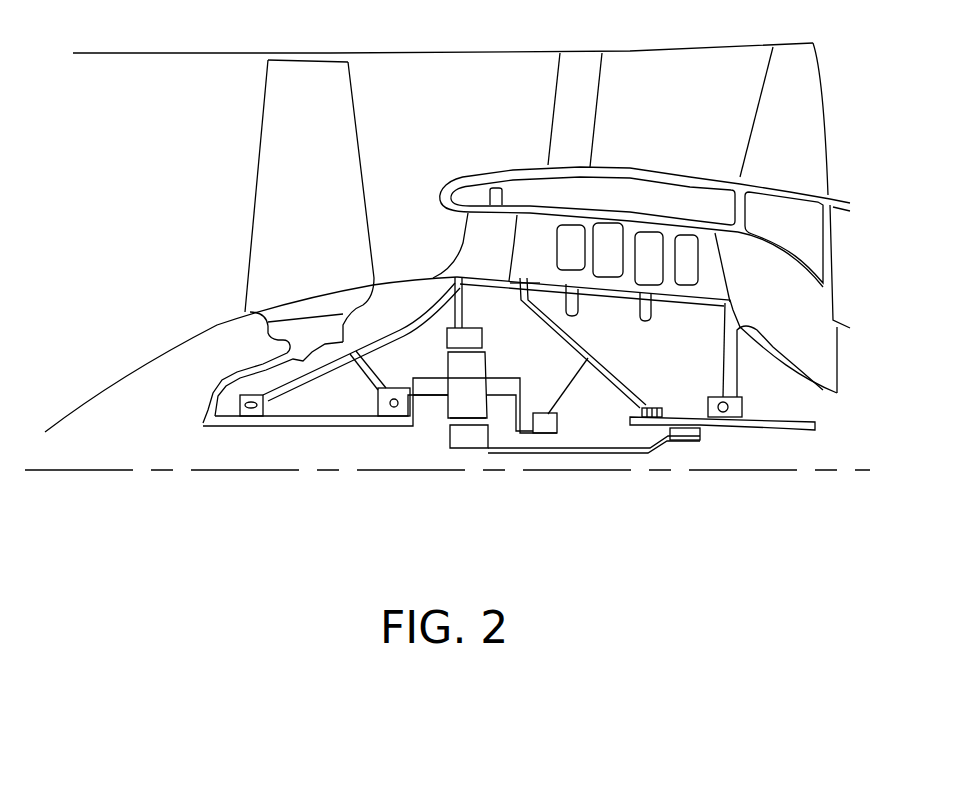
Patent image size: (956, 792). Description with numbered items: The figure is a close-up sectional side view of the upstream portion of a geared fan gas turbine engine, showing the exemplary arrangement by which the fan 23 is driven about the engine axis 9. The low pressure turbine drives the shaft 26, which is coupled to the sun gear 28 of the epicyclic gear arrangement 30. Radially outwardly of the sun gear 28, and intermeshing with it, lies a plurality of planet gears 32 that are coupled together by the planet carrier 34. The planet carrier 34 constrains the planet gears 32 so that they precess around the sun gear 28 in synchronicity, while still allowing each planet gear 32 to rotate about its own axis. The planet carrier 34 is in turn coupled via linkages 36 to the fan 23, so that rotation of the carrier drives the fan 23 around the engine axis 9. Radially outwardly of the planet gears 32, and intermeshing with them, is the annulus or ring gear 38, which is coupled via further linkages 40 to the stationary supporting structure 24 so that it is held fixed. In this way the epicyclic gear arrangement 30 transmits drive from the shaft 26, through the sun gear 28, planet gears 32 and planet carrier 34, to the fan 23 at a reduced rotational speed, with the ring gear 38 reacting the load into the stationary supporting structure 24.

The engine axis 9 is at (137, 471).
The fan 23 is at (283, 186).
The stationary supporting structure 24 is at (470, 237).
The shaft 26 is at (593, 452).
The sun gear 28 is at (473, 440).
The epicyclic gear arrangement 30 is at (432, 422).
The planet gears 32 is at (457, 408).
The planet carrier 34 is at (515, 402).
The linkages 36 is at (417, 415).
The ring gear 38 is at (470, 337).
The linkages 40 is at (470, 308).